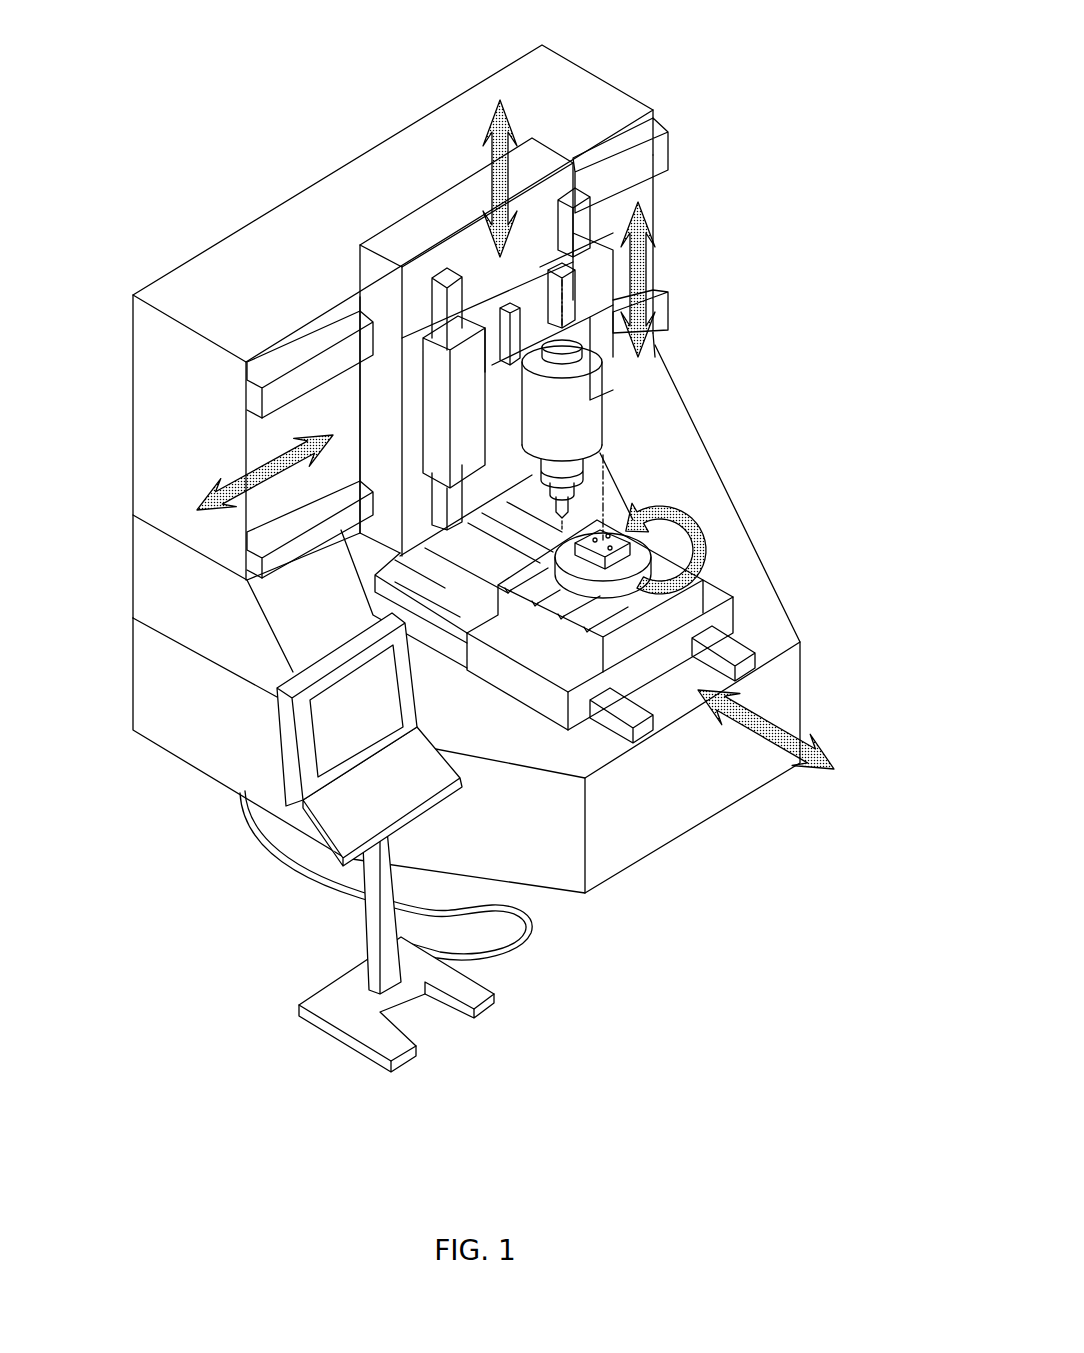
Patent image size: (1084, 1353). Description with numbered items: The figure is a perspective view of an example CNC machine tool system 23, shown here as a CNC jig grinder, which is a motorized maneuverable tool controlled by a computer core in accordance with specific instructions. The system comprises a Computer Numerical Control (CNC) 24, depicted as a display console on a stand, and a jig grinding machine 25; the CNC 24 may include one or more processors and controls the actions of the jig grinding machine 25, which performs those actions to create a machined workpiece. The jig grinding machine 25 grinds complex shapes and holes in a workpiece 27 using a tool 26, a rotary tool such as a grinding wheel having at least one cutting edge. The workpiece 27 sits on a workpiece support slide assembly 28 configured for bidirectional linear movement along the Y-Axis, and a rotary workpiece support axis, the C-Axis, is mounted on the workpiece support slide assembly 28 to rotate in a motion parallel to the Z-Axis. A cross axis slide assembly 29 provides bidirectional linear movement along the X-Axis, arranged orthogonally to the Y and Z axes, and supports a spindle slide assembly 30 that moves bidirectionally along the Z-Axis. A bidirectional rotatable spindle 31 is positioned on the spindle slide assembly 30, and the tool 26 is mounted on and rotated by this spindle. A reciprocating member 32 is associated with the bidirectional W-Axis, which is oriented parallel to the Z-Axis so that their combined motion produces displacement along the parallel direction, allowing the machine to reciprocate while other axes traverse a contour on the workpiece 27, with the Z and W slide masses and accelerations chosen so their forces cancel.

The CNC machine tool system 23 is at (421, 356).
The Computer Numerical Control (CNC) 24 is at (365, 793).
The jig grinding machine 25 is at (205, 697).
The tool 26 is at (580, 507).
The workpiece 27 is at (617, 563).
The workpiece support slide assembly 28 is at (647, 652).
The cross axis slide assembly 29 is at (453, 213).
The spindle slide assembly 30 is at (468, 373).
The bidirectional rotatable spindle 31 is at (600, 453).
The reciprocating member 32 is at (580, 407).